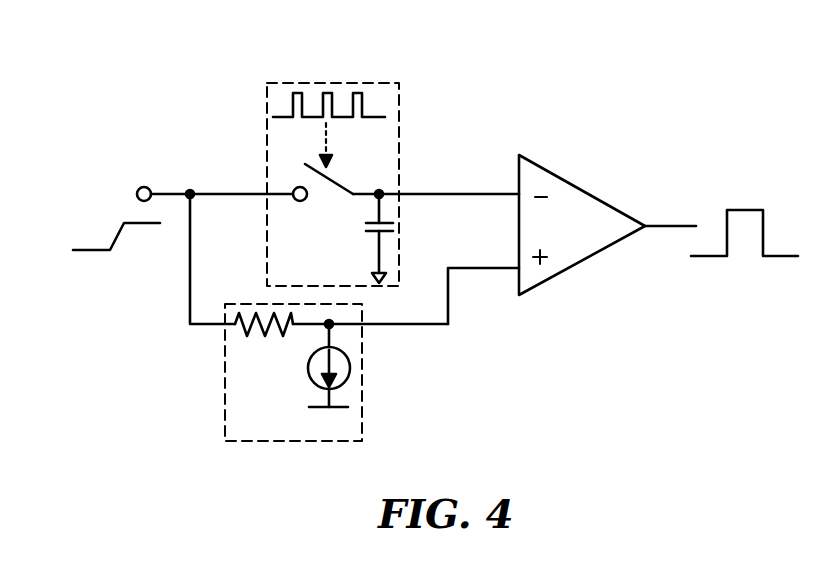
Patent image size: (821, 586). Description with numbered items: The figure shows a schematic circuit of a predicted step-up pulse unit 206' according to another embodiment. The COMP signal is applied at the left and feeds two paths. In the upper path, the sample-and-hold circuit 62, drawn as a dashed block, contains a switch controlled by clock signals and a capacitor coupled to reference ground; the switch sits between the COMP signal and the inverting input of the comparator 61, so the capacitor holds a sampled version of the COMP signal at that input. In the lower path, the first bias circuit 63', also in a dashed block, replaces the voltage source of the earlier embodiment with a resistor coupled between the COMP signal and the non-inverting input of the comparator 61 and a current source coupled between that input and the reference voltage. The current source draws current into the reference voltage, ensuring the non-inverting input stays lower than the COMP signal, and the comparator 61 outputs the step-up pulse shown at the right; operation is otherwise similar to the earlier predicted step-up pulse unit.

The predicted step-up pulse unit 206' is at (427, 242).
The sample-and-hold circuit 62 is at (407, 109).
The comparator 61 is at (577, 177).
The first bias circuit 63' is at (321, 372).